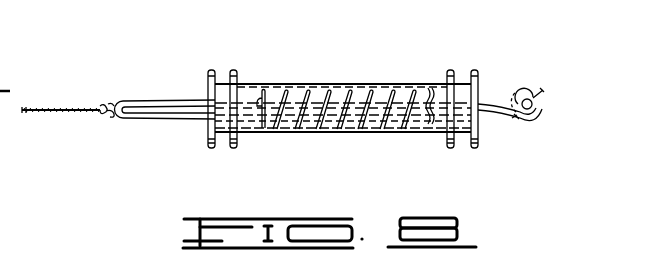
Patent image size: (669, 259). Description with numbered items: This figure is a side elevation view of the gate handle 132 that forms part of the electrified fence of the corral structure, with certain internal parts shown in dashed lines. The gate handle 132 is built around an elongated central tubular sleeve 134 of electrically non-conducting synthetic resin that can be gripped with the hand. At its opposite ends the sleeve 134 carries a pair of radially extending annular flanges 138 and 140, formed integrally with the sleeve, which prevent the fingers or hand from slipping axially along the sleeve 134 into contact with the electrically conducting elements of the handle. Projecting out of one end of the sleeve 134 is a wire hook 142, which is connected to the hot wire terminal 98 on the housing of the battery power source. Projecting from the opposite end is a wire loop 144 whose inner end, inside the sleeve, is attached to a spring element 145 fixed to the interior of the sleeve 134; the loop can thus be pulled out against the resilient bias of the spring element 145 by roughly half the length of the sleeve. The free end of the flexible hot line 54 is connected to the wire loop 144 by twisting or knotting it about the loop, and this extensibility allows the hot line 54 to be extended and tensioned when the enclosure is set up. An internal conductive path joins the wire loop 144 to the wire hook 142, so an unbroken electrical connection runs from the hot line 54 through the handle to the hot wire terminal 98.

The flexible hot line 54 is at (55, 117).
The hot wire terminal 98 is at (512, 88).
The gate handle 132 is at (294, 82).
The central tubular sleeve 134 is at (341, 82).
The annular flange 138 is at (233, 150).
The annular flange 140 is at (450, 150).
The wire hook 142 is at (505, 106).
The wire loop 144 is at (122, 120).
The spring element 145 is at (365, 135).